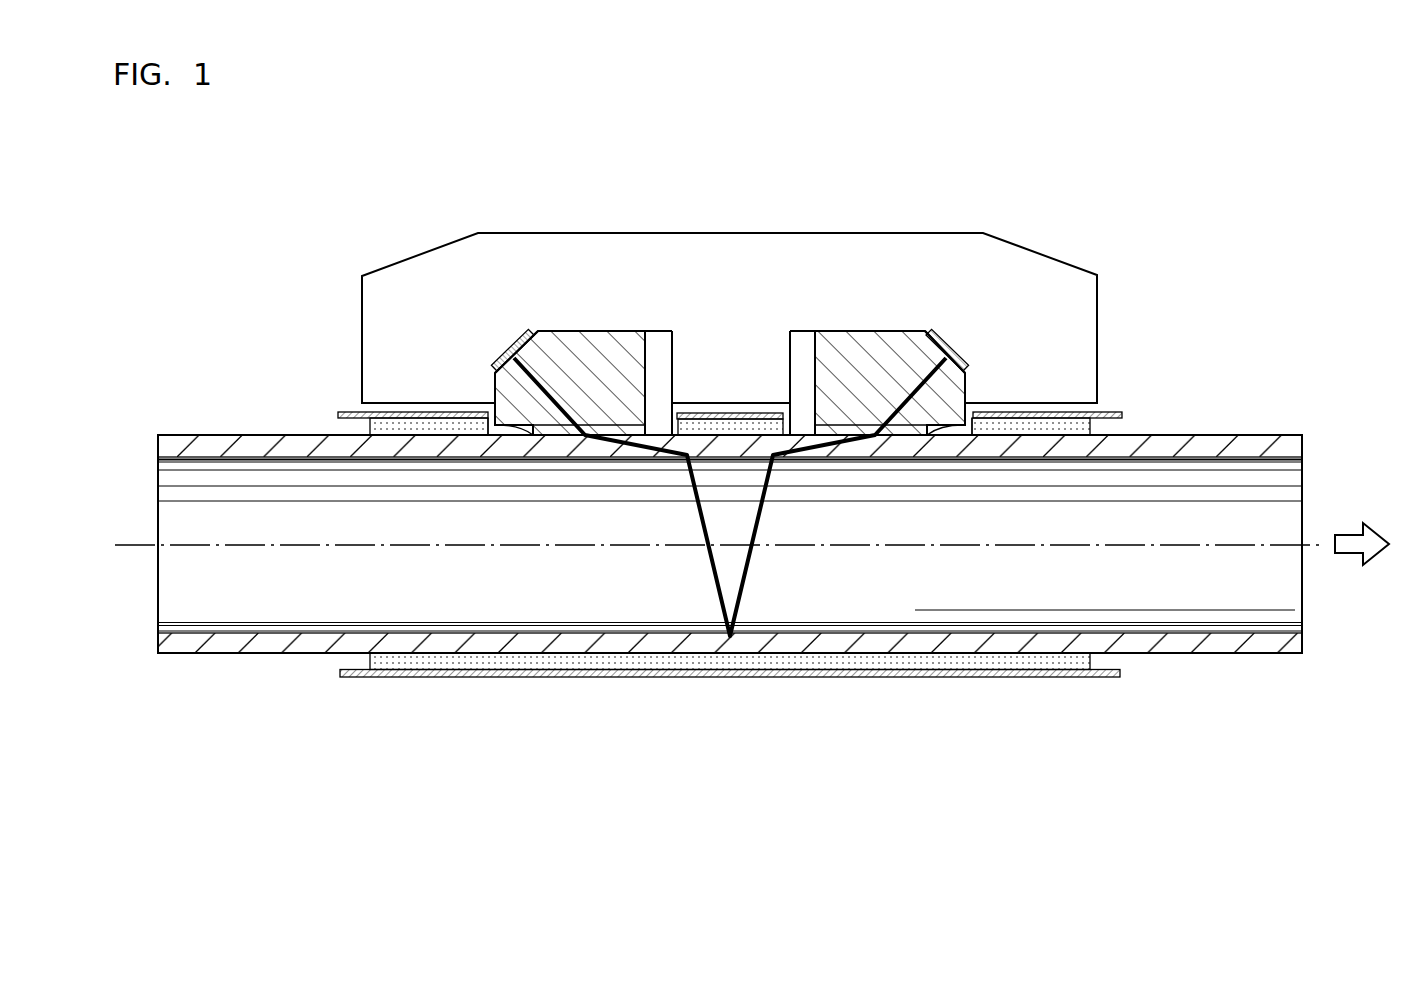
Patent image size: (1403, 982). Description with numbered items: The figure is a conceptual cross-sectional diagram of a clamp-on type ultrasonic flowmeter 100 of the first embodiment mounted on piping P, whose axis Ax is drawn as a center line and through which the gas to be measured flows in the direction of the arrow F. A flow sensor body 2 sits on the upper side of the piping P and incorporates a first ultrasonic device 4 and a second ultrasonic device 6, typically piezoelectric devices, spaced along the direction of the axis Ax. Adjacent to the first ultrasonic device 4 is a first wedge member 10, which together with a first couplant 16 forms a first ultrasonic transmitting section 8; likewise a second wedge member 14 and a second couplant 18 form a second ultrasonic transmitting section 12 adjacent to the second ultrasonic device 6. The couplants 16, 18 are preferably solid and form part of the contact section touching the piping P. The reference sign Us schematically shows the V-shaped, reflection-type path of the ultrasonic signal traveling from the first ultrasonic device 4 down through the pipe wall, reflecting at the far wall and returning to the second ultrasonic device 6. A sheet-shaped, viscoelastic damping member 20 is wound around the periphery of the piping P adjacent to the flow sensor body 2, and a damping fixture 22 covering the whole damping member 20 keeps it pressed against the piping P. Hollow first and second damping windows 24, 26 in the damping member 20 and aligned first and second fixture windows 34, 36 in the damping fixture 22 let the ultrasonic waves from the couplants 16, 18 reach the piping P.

The clamp-on type ultrasonic flowmeter 100 is at (320, 234).
The flow sensor body 2 is at (888, 233).
The first ultrasonic device 4 is at (527, 332).
The second ultrasonic device 6 is at (935, 333).
The first ultrasonic transmitting section 8 is at (404, 369).
The first wedge member 10 is at (523, 378).
The first couplant 16 is at (538, 418).
The second ultrasonic transmitting section 12 is at (1061, 368).
The second wedge member 14 is at (943, 382).
The second couplant 18 is at (930, 418).
The damping member 20 is at (372, 427).
The damping fixture 22 is at (352, 413).
The first damping window 24 is at (512, 424).
The first fixture window 34 is at (497, 422).
The second fixture window 36 is at (963, 422).
The second damping window 26 is at (948, 424).
The piping P is at (1258, 432).
The arrow indicating flow direction F is at (1348, 556).
The axis of the piping Ax is at (218, 548).
The path of ultrasonic signal Us is at (745, 592).